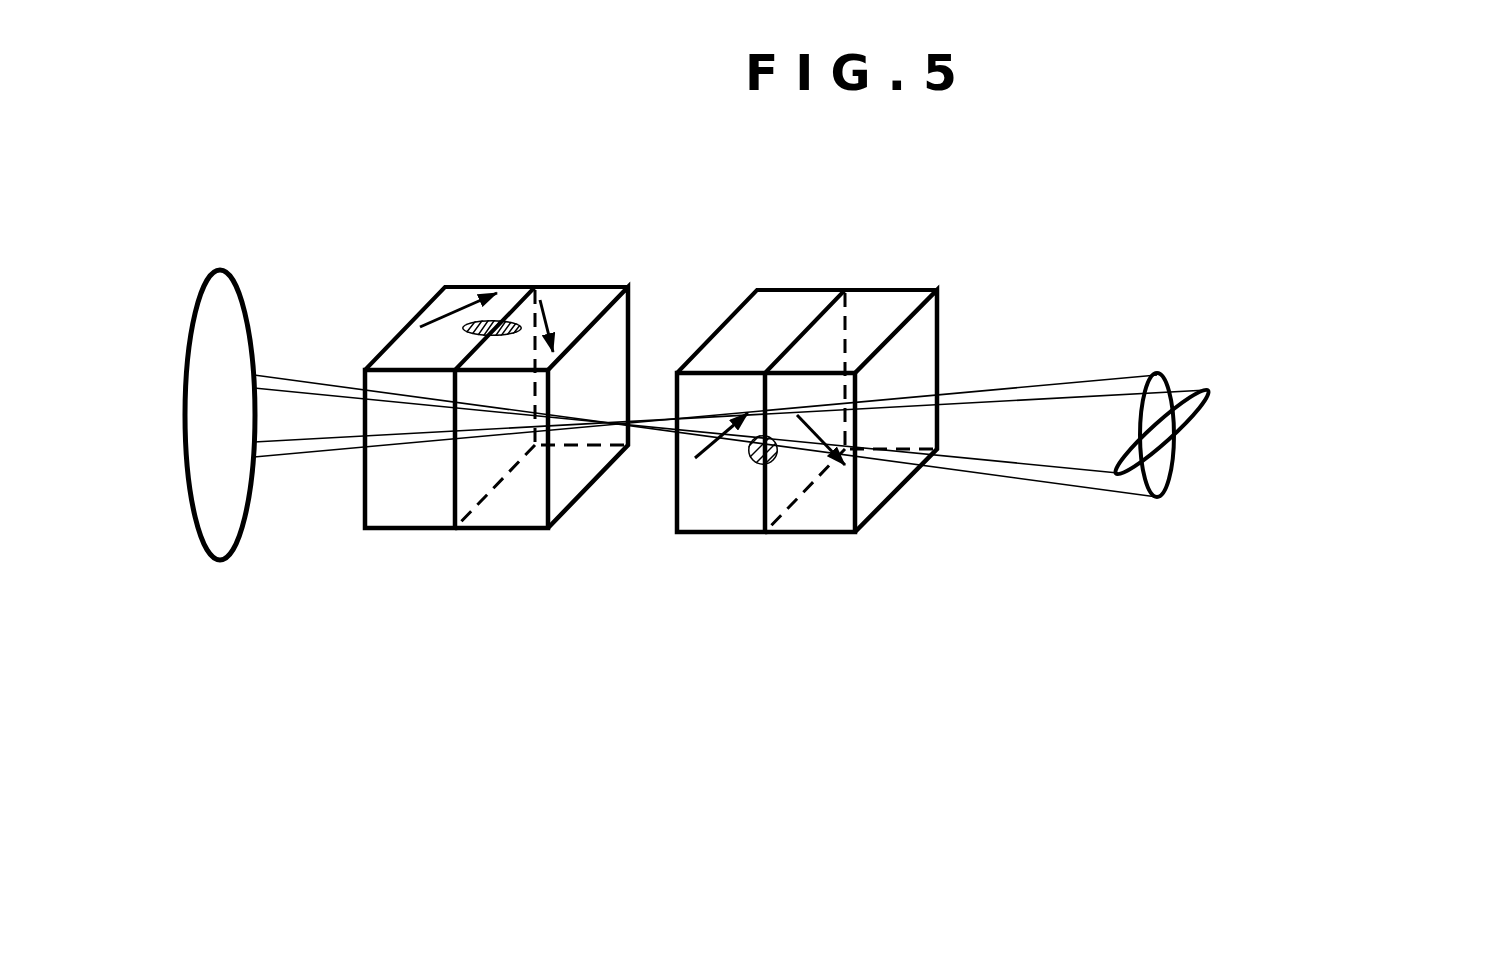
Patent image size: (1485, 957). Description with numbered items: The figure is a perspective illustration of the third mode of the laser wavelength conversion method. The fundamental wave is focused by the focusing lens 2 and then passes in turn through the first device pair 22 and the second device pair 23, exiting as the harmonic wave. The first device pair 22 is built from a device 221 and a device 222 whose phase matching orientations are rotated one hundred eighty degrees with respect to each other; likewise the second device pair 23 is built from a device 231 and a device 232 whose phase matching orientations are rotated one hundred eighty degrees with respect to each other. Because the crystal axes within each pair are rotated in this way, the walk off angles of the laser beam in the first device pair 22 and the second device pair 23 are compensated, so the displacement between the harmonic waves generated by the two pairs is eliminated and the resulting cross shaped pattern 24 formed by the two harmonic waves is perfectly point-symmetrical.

The focusing lens 2 is at (210, 323).
The first device pair 22 is at (574, 385).
The device 221 is at (450, 297).
The device 222 is at (607, 290).
The second device pair 23 is at (979, 381).
The device 231 is at (803, 297).
The device 232 is at (895, 298).
The point symmetrical cross shaped beam 24 is at (1160, 435).